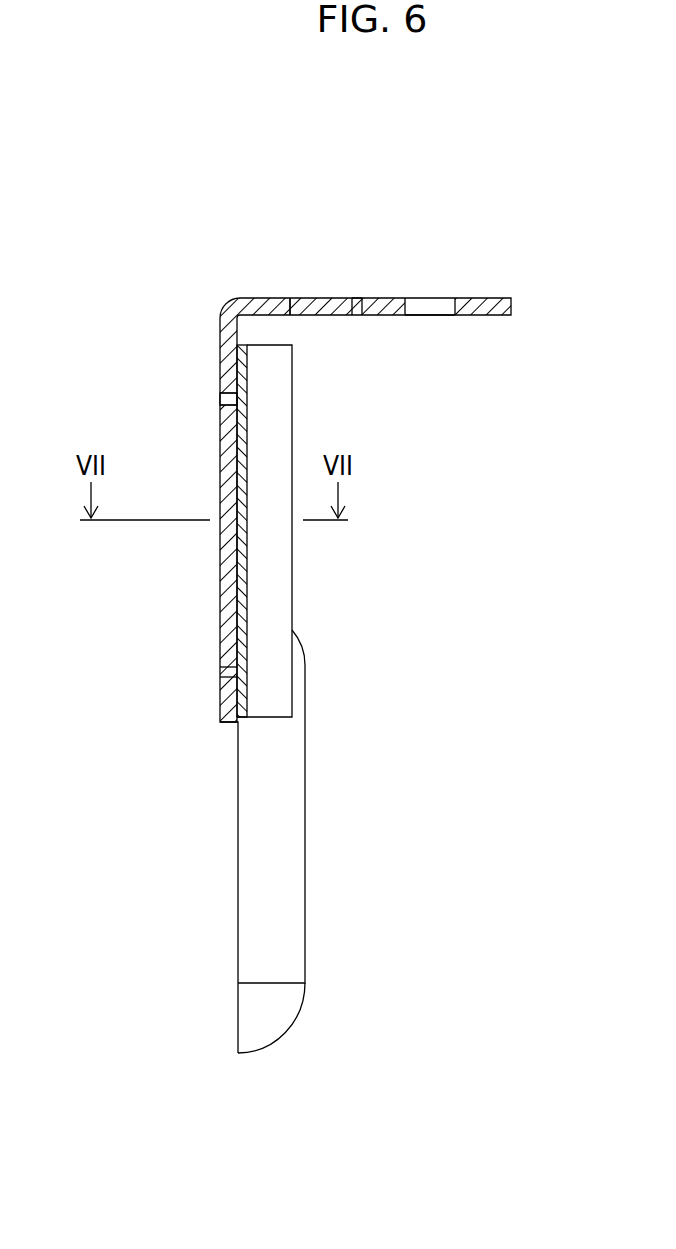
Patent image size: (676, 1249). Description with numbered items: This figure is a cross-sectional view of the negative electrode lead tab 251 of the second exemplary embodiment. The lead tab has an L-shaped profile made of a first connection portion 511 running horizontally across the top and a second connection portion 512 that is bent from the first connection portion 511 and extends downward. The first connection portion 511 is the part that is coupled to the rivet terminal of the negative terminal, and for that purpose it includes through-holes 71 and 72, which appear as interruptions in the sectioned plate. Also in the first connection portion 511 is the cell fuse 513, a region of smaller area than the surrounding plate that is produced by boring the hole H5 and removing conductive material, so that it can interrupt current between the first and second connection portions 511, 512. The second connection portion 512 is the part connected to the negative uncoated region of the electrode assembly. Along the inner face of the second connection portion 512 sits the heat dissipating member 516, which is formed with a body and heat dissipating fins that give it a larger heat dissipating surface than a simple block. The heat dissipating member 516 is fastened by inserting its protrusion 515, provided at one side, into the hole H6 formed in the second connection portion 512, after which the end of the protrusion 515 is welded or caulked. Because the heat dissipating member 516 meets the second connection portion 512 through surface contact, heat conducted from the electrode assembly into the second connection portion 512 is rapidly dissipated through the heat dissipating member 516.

The negative electrode lead tab 251 is at (372, 140).
The first connection portion 511 is at (379, 469).
The second connection portion 512 is at (326, 469).
The cell fuse 513 is at (290, 299).
The protrusion 515 is at (220, 421).
The heat dissipating member 516 is at (280, 575).
The through-hole 71 is at (428, 299).
The through-hole 72 is at (355, 299).
The hole H5 is at (298, 305).
The hole H6 is at (223, 397).